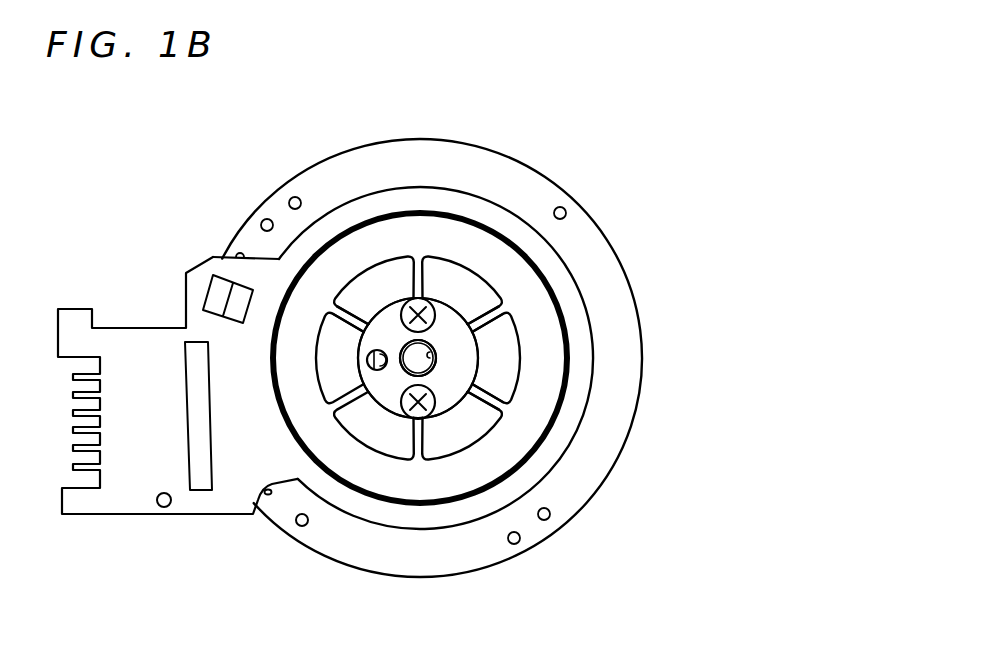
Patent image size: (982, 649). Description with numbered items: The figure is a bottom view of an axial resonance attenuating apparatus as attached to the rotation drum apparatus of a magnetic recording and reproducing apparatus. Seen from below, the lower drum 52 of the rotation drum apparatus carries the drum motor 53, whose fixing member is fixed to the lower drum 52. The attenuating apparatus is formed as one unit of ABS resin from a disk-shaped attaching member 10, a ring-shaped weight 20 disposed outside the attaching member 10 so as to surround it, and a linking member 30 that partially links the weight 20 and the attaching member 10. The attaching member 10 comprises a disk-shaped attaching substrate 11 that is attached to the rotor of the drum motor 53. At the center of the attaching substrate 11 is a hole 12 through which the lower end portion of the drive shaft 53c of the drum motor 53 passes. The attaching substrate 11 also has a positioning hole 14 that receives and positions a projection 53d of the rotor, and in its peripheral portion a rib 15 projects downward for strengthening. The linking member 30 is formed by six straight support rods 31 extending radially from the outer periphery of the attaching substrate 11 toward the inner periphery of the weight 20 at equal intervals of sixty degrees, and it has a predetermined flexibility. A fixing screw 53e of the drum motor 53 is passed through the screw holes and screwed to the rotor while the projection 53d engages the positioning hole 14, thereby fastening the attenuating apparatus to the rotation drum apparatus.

The attaching member 10 is at (445, 383).
The attaching substrate 11 is at (388, 392).
The hole 12 is at (437, 353).
The positioning hole 14 is at (272, 494).
The rib 15 is at (465, 295).
The weight 20 is at (545, 397).
The linking member 30 is at (452, 412).
The support rod 31 is at (420, 300).
The lower drum 52 is at (510, 168).
The drum motor 53 is at (547, 283).
The drive shaft 53c is at (363, 317).
The projection 53d is at (372, 360).
The fixing screw 53e is at (393, 353).